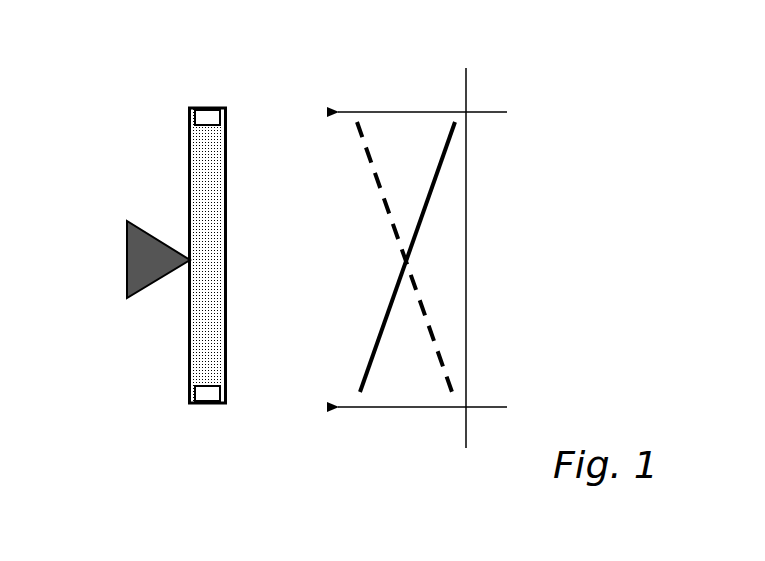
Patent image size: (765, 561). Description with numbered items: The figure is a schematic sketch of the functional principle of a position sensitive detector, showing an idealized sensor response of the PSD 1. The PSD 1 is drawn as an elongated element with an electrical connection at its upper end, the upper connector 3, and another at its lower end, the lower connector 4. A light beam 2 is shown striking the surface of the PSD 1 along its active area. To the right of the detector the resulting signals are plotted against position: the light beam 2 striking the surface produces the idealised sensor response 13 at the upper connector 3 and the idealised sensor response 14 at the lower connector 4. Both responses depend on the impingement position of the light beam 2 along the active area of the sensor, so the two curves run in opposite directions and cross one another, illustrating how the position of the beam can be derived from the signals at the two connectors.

The PSD 1 is at (205, 342).
The light beam 2 is at (157, 278).
The upper connector 3 is at (208, 108).
The lower connector 4 is at (213, 405).
The idealised sensor response 13 is at (437, 353).
The idealised sensor response 14 is at (430, 197).